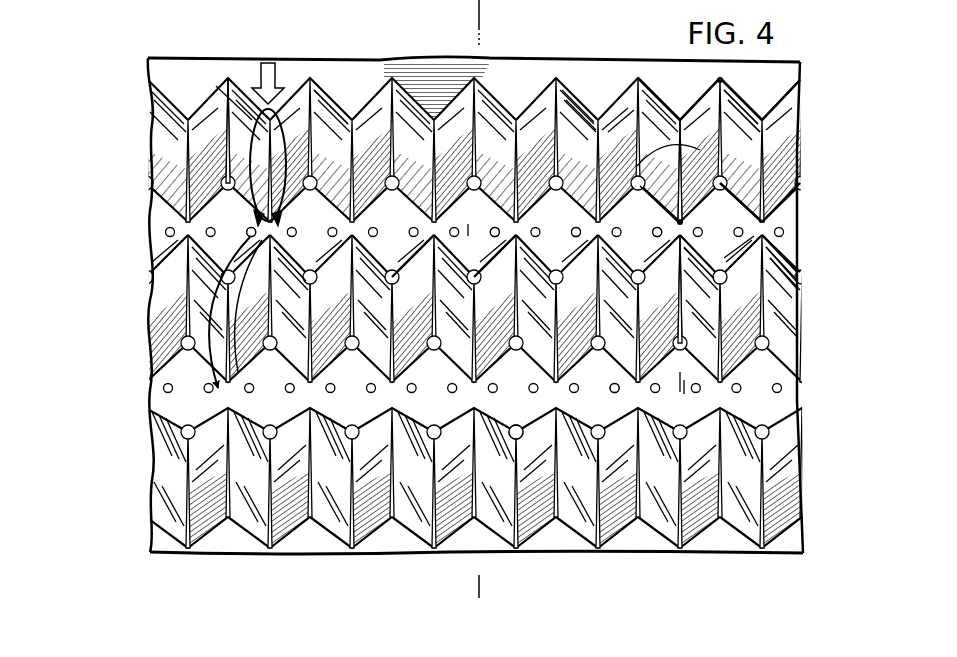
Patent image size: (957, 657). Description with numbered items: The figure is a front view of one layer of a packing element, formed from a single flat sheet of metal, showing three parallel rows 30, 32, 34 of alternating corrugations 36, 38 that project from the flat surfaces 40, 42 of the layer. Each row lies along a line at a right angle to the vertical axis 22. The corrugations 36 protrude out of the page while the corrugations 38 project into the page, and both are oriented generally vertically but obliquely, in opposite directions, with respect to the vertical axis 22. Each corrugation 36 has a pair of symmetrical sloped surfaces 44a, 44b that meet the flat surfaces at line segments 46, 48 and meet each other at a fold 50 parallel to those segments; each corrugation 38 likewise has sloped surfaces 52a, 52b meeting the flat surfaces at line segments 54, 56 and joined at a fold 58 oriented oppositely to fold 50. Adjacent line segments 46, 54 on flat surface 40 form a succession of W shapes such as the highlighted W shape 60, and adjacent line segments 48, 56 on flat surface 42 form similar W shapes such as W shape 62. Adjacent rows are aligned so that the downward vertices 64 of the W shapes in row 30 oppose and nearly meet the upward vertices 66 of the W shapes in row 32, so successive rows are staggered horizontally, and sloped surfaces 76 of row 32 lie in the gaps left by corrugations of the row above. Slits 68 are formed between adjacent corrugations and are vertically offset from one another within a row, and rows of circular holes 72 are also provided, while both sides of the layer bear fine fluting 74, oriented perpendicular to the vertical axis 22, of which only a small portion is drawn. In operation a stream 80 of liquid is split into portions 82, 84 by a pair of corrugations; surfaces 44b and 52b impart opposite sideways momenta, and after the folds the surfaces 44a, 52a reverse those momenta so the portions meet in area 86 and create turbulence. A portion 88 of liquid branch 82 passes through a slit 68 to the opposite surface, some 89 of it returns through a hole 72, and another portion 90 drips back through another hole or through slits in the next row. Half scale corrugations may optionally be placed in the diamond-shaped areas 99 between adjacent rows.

The vertical axis 22 is at (480, 12).
The row of corrugations 30 is at (863, 72).
The row of corrugations 32 is at (863, 225).
The row of corrugations 34 is at (863, 395).
The corrugation 36 is at (303, 83).
The corrugation 38 is at (250, 121).
The flat surface 40 is at (725, 250).
The flat surface 42 is at (772, 90).
The sloped surface 44a is at (702, 200).
The sloped surface 44b is at (712, 78).
The line segment 46 is at (699, 259).
The line segment 48 is at (700, 88).
The fold 50 is at (668, 157).
The sloped surface 52a is at (654, 192).
The sloped surface 52b is at (655, 102).
The line segment 54 is at (666, 212).
The line segment 56 is at (644, 78).
The fold 58 is at (646, 152).
The W shape 60 is at (803, 185).
The W shape 62 is at (783, 100).
The downward vertex 64 is at (801, 205).
The upward vertex 66 is at (798, 248).
The slit 68 is at (808, 137).
The circular hole 72 is at (246, 236).
The fine fluting 74 is at (422, 80).
The corrugation surface 76 is at (422, 264).
The stream of liquid 80 is at (264, 74).
The liquid portion 82 is at (284, 122).
The liquid portion 84 is at (225, 91).
The area 86 is at (286, 216).
The liquid portion 88 is at (250, 220).
The liquid portion 89 is at (256, 268).
The liquid portion 90 is at (212, 370).
The diamond-shaped area 99 is at (515, 410).